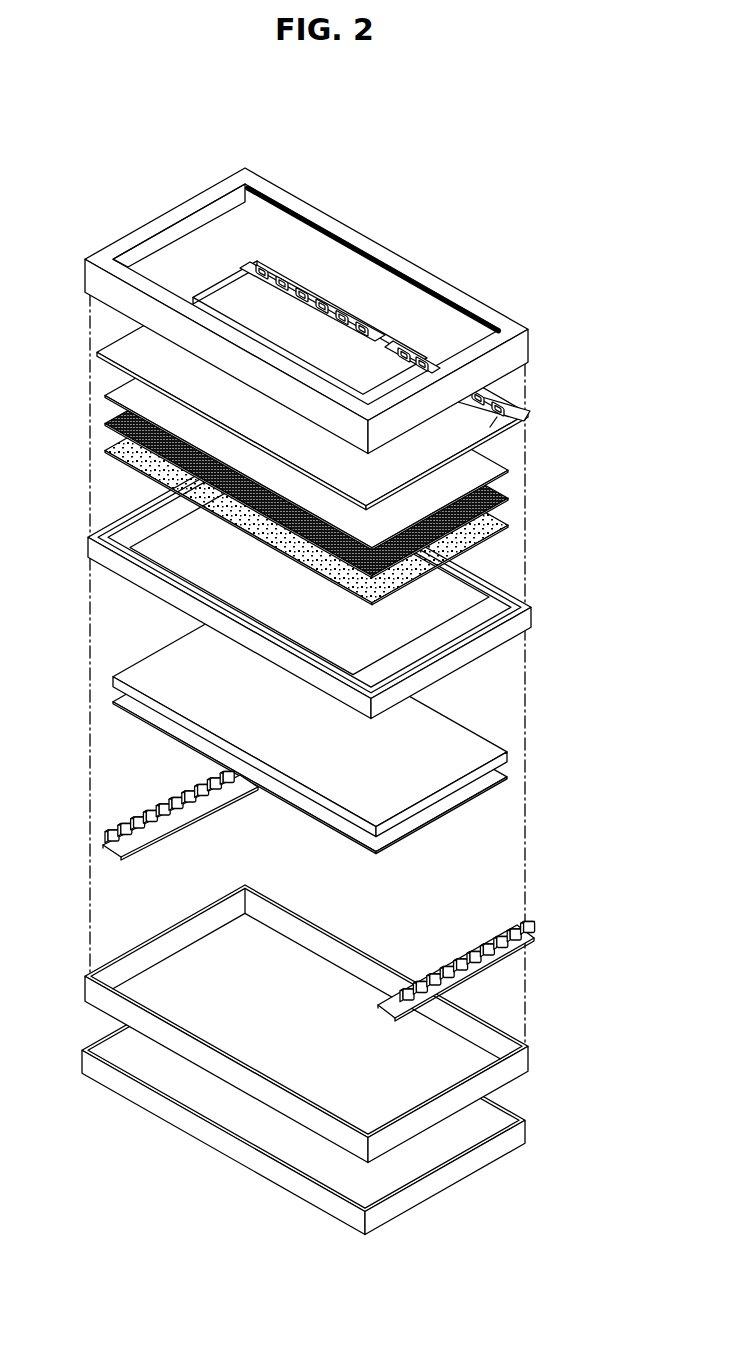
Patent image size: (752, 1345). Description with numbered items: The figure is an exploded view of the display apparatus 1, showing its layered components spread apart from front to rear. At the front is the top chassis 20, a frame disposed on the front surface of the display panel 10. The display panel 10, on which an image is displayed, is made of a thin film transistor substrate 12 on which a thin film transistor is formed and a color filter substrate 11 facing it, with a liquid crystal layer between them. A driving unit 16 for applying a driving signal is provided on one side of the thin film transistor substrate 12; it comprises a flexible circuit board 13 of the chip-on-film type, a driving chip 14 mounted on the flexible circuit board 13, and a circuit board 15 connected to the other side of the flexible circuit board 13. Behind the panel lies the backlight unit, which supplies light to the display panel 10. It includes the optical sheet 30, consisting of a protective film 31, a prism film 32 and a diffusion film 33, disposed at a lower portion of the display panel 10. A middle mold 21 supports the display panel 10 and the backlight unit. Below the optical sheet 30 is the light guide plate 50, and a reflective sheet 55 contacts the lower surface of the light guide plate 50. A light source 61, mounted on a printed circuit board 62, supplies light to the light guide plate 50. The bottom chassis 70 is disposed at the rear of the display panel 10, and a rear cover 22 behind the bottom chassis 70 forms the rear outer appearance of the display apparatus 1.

The display apparatus 1 is at (70, 186).
The display panel 10 is at (359, 385).
The color filter substrate 11 is at (520, 409).
The thin film transistor substrate 12 is at (501, 438).
The flexible circuit board 13 is at (262, 270).
The driving chip 14 is at (298, 283).
The circuit board 15 is at (300, 275).
The driving unit 16 is at (340, 251).
The top chassis 20 is at (342, 291).
The middle mold 21 is at (527, 622).
The rear cover 22 is at (528, 1130).
The optical sheet 30 is at (363, 461).
The protective film 31 is at (581, 548).
The prism film 32 is at (508, 500).
The diffusion film 33 is at (508, 527).
The light guide plate 50 is at (516, 747).
The reflective sheet 55 is at (452, 803).
The light source 61 is at (118, 824).
The printed circuit board 62 is at (153, 816).
The bottom chassis 70 is at (541, 1056).